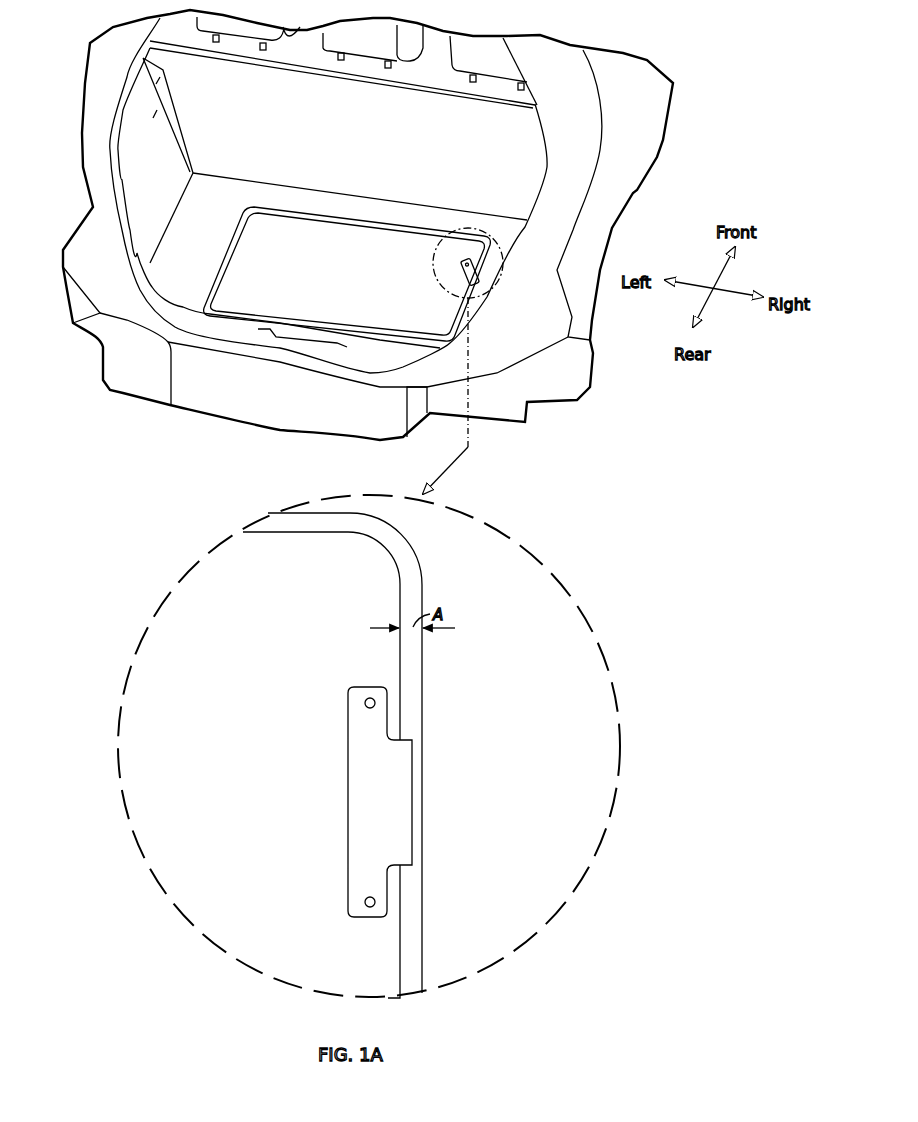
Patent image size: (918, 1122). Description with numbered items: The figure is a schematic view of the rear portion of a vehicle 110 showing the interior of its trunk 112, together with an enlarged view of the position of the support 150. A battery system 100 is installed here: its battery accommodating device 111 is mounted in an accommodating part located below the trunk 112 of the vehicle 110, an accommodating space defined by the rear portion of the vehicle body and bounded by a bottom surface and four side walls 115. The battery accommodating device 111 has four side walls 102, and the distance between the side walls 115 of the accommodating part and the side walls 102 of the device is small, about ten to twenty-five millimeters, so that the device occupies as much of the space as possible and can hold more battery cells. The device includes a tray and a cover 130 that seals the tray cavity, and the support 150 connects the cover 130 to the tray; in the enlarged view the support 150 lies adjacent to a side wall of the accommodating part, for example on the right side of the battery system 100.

The battery system 100 is at (223, 223).
The side walls of the battery accommodating device 102 is at (400, 944).
The vehicle 110 is at (633, 31).
The battery accommodating device 111 is at (323, 216).
The trunk 112 is at (203, 147).
The side walls of the accommodating part 115 is at (421, 230).
The cover 130 is at (399, 574).
The support 150 is at (473, 257).